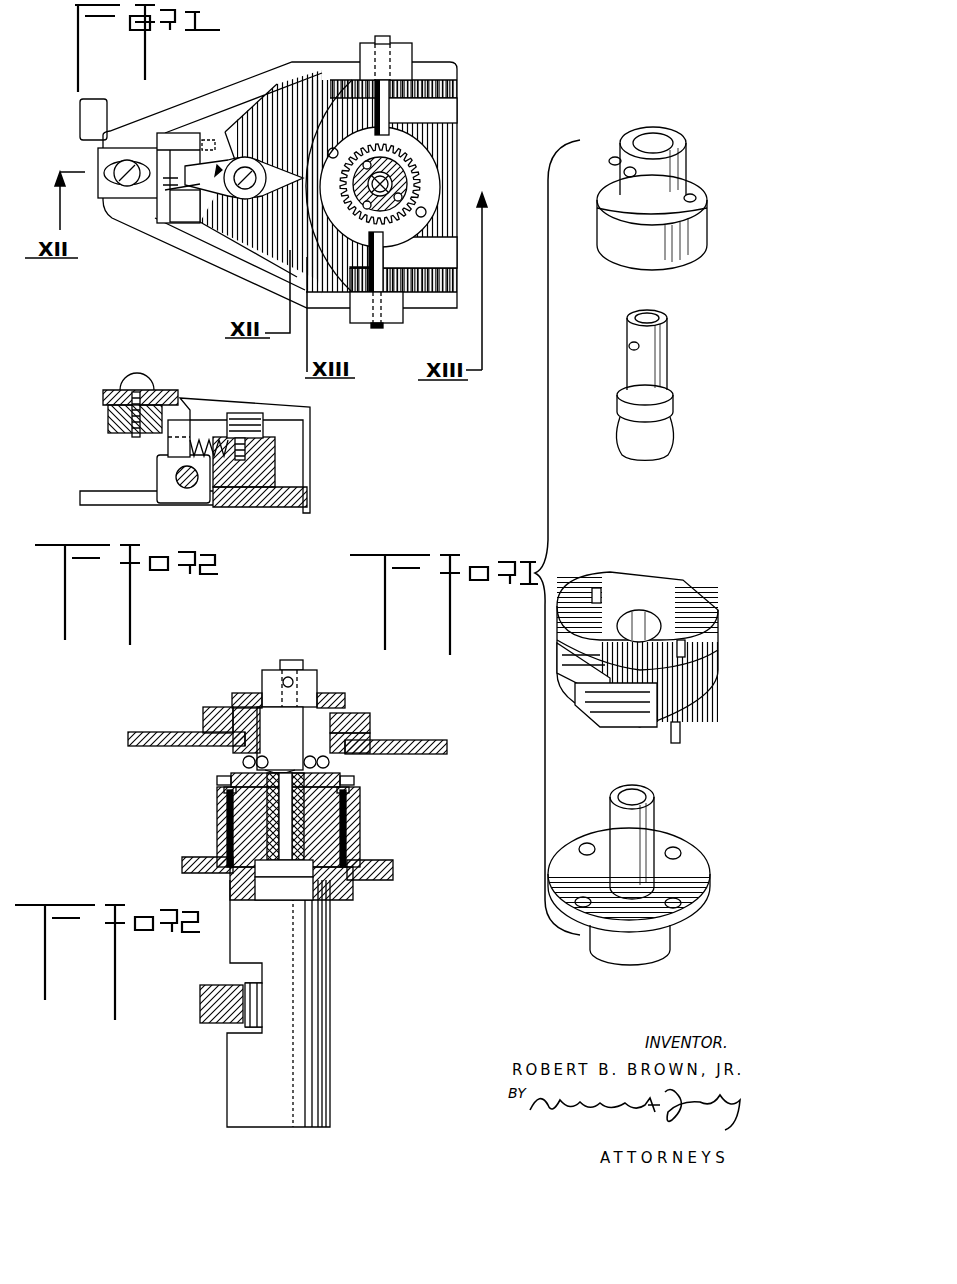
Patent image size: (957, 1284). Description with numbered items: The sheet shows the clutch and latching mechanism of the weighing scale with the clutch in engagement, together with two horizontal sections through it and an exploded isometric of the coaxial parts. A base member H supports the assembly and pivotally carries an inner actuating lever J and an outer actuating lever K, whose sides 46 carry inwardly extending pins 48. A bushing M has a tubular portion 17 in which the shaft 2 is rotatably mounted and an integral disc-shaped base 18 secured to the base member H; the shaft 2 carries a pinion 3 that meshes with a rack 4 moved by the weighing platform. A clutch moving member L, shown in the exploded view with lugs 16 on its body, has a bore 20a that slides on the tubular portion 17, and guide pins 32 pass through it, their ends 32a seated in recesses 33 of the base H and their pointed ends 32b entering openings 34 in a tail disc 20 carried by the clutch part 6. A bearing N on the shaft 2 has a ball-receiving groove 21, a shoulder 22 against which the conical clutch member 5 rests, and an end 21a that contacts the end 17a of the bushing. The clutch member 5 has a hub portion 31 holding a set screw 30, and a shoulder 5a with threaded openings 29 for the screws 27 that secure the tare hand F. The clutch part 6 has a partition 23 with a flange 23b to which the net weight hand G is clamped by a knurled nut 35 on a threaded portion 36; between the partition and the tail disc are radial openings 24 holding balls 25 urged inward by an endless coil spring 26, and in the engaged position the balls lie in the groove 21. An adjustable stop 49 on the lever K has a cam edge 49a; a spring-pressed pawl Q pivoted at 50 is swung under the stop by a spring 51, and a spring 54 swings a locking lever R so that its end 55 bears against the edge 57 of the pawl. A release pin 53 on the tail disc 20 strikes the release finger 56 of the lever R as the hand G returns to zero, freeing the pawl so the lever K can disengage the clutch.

In FIG. 11, the shaft 2 is at (400, 181).
In FIG. 13, the shaft 2 is at (250, 975).
In FIG. 13, the pinion 3 is at (250, 1005).
In FIG. 13, the rack 4 is at (210, 1015).
In FIG. 13, the clutch member 5 is at (355, 717).
In FIG. 14, the clutch member 5 is at (705, 223).
In FIG. 13, the shoulder 5a is at (282, 683).
In FIG. 14, the shoulder 5a is at (698, 178).
In FIG. 11, the clutch member 6 is at (415, 180).
In FIG. 13, the clutch member 6 is at (344, 704).
In FIG. 14, the lug 16 is at (716, 675).
In FIG. 13, the tubular portion 17 is at (270, 820).
In FIG. 14, the tubular portion 17 is at (656, 820).
In FIG. 14, the end of bushing 17a is at (648, 800).
In FIG. 13, the disc-shaped base 18 is at (215, 857).
In FIG. 14, the disc-shaped base 18 is at (695, 860).
In FIG. 13, the tail disc 20 is at (222, 780).
In FIG. 13, the bore 20a is at (355, 803).
In FIG. 14, the bore 20a is at (648, 622).
In FIG. 11, the ball-receiving groove 21 is at (440, 180).
In FIG. 13, the ball-receiving groove 21 is at (302, 754).
In FIG. 14, the ball-receiving groove 21 is at (672, 430).
In FIG. 14, the end of bearing 21a is at (655, 462).
In FIG. 13, the shoulder 22 is at (268, 745).
In FIG. 14, the shoulder 22 is at (673, 398).
In FIG. 13, the partition 23 is at (245, 730).
In FIG. 13, the flange 23b is at (435, 757).
In FIG. 11, the radially extending openings 24 is at (388, 222).
In FIG. 11, the ball 25 is at (390, 165).
In FIG. 13, the ball 25 is at (330, 763).
In FIG. 11, the endless coil spring 26 is at (420, 163).
In FIG. 13, the endless coil spring 26 is at (242, 762).
In FIG. 13, the screws 27 is at (325, 695).
In FIG. 14, the threaded openings 29 is at (613, 158).
In FIG. 13, the set screw 30 is at (265, 683).
In FIG. 13, the hub portion 31 is at (268, 688).
In FIG. 14, the hub portion 31 is at (680, 143).
In FIG. 13, the guide pins 32 is at (225, 803).
In FIG. 14, the guide pins 32 is at (605, 592).
In FIG. 13, the pin ends 32a is at (228, 876).
In FIG. 14, the pin ends 32a is at (690, 735).
In FIG. 13, the pointed pin ends 32b is at (228, 790).
In FIG. 14, the pointed pin ends 32b is at (592, 590).
In FIG. 13, the recesses 33 is at (238, 868).
In FIG. 13, the openings 34 is at (228, 775).
In FIG. 13, the knurled nut 35 is at (215, 712).
In FIG. 13, the threaded portion 36 is at (380, 735).
In FIG. 11, the sides of lever K 46 is at (435, 72).
In FIG. 12, the sides of lever K 46 is at (305, 415).
In FIG. 11, the pins 48 is at (385, 92).
In FIG. 11, the adjustable stop member 49 is at (98, 160).
In FIG. 12, the adjustable stop member 49 is at (100, 393).
In FIG. 11, the cam edge 49a is at (155, 160).
In FIG. 12, the cam edge 49a is at (186, 410).
In FIG. 12, the pivot 50 is at (180, 477).
In FIG. 12, the spring 51 is at (215, 410).
In FIG. 11, the release pin 53 is at (342, 85).
In FIG. 11, the spring 54 is at (195, 152).
In FIG. 11, the end of locking lever 55 is at (182, 148).
In FIG. 12, the end of locking lever 55 is at (190, 418).
In FIG. 11, the release finger 56 is at (287, 160).
In FIG. 12, the release finger 56 is at (310, 478).
In FIG. 11, the edge of pawl 57 is at (178, 178).
In FIG. 12, the edge of pawl 57 is at (110, 412).
In FIG. 13, the tare weight indicating hand F is at (230, 699).
In FIG. 13, the net weight indicating hand G is at (133, 732).
In FIG. 11, the base member H is at (437, 91).
In FIG. 12, the base member H is at (310, 517).
In FIG. 13, the base member H is at (400, 873).
In FIG. 11, the inner actuating lever J is at (433, 113).
In FIG. 11, the outer actuating lever K is at (438, 74).
In FIG. 12, the outer actuating lever K is at (105, 423).
In FIG. 13, the clutch moving member L is at (370, 820).
In FIG. 14, the clutch moving member L is at (715, 603).
In FIG. 13, the bushing M is at (320, 834).
In FIG. 14, the bushing M is at (664, 812).
In FIG. 11, the bearing N is at (325, 134).
In FIG. 13, the bearing N is at (272, 666).
In FIG. 14, the bearing N is at (674, 359).
In FIG. 11, the spring-pressed pawl Q is at (162, 225).
In FIG. 12, the spring-pressed pawl Q is at (170, 448).
In FIG. 11, the spring-pressed locking lever R is at (193, 221).
In FIG. 12, the spring-pressed locking lever R is at (218, 420).